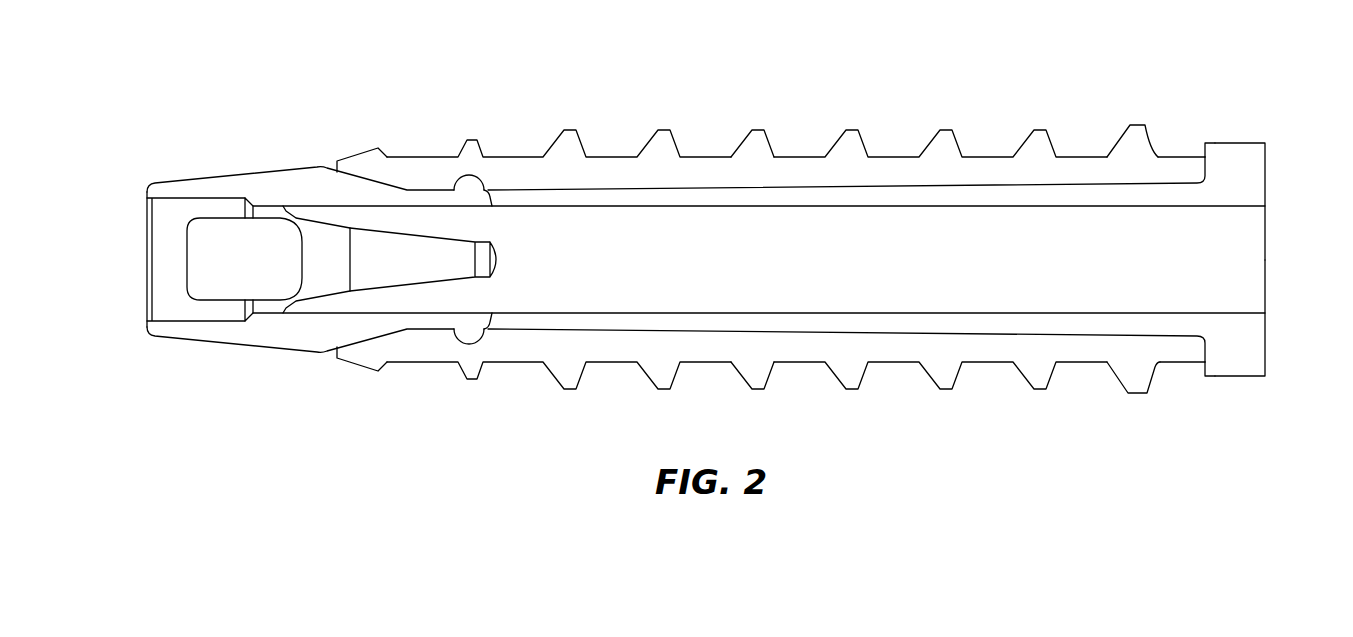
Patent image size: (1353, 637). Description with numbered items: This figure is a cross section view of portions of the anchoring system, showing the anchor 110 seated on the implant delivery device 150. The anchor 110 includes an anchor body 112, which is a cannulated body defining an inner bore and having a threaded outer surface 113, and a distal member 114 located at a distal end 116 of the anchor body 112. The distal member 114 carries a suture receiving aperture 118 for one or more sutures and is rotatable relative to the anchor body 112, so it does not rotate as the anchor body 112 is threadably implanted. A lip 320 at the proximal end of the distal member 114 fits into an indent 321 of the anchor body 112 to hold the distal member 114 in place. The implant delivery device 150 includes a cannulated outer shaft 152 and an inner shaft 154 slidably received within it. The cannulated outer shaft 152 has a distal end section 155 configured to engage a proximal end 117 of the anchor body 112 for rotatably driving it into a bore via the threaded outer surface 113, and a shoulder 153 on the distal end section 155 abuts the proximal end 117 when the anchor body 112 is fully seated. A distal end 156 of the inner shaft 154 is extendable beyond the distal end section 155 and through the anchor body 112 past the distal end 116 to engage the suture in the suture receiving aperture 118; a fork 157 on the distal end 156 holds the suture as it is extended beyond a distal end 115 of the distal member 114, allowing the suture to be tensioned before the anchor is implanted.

The anchor 110 is at (222, 72).
The anchor body 112 is at (661, 148).
The threaded outer surface 113 is at (753, 146).
The distal member 114 is at (283, 333).
The distal end of the distal member 115 is at (147, 253).
The distal end of the anchor body 116 is at (352, 163).
The proximal end of the anchor body 117 is at (1203, 180).
The suture receiving aperture 118 is at (222, 289).
The implant delivery device 150 is at (1253, 350).
The cannulated outer shaft 152 is at (1253, 178).
The shoulder 153 is at (1203, 155).
The inner shaft 154 is at (732, 275).
The distal end section 155 is at (872, 102).
The distal end of the inner shaft 156 is at (370, 302).
The fork 157 is at (343, 302).
The lip 320 is at (457, 190).
The indent 321 is at (481, 191).